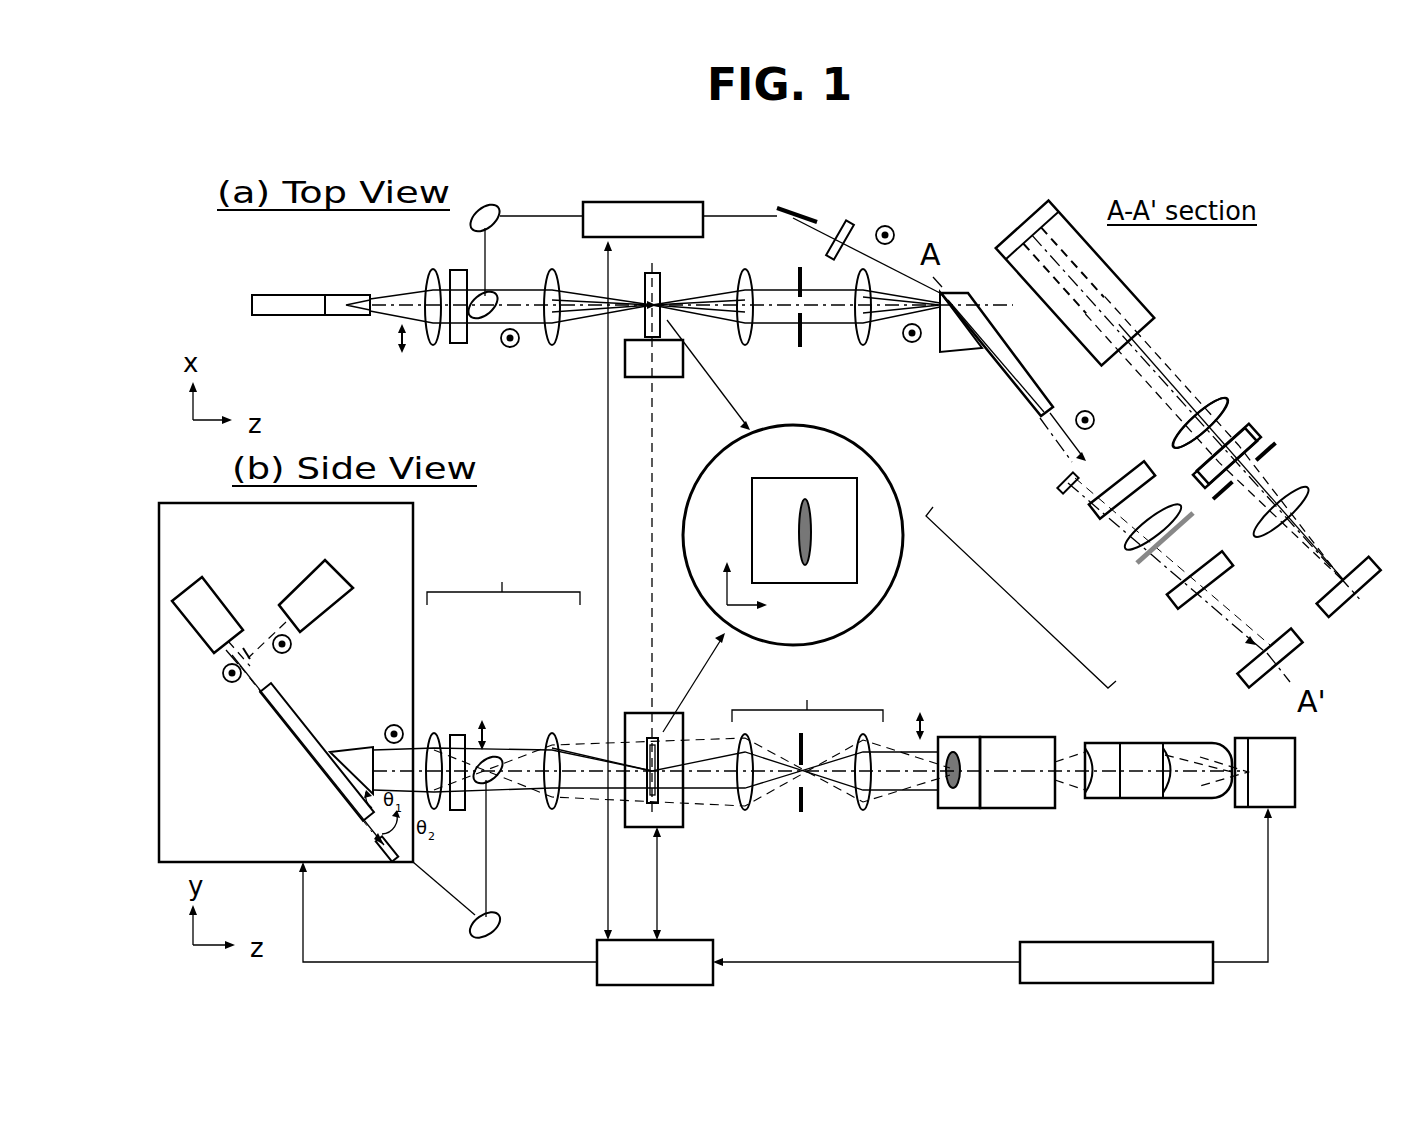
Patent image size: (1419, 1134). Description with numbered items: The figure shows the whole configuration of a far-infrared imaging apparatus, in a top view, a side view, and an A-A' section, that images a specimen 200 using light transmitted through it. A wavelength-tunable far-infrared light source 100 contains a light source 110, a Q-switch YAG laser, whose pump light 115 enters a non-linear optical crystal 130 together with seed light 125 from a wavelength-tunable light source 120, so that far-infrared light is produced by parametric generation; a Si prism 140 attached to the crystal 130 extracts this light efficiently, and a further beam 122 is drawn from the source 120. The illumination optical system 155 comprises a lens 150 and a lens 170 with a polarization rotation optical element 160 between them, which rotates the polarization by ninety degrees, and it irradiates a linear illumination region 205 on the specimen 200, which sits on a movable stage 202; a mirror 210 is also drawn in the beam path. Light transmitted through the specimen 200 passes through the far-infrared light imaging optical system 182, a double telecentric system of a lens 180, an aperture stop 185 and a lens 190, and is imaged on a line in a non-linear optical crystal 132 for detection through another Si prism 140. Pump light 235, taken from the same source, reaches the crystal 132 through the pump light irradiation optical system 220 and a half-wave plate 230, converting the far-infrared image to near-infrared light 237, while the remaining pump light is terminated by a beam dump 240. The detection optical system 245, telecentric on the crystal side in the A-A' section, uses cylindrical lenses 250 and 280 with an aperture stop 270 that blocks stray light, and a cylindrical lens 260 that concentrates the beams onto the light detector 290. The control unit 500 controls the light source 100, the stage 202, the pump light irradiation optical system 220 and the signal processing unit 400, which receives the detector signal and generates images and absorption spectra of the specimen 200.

The wavelength-tunable far-infrared light source 100 is at (413, 565).
The light source 110 is at (202, 588).
The pump light 115 is at (229, 652).
The wavelength-tunable light source 120 is at (325, 578).
The second light beam 122 is at (245, 653).
The seed light 125 is at (256, 672).
The non-linear optical crystal 130 is at (288, 317).
The non-linear optical crystal for detection 132 is at (1035, 833).
The Si prism 140 is at (347, 297).
The lens 150 is at (433, 730).
The illumination optical system 155 is at (503, 572).
The polarization rotation optical element 160 is at (460, 733).
The lens 170 is at (555, 737).
The lens 180 is at (743, 813).
The far-infrared light imaging optical system 182 is at (807, 689).
The aperture stop 185 is at (800, 813).
The lens 190 is at (858, 813).
The specimen 200 is at (653, 803).
The stage 202 is at (637, 380).
The linear illumination region 205 is at (802, 510).
The galvano mirror 210 is at (497, 753).
The pump light irradiation optical system 220 is at (630, 198).
The half-wave plate 230 is at (845, 223).
The pump light 235 is at (905, 270).
The near-infrared light 237 is at (1152, 390).
The beam dump 240 is at (1057, 491).
The detection optical system 245 is at (1021, 597).
The cylindrical lens 250 is at (1083, 523).
The cylindrical lens 260 is at (1128, 552).
The aperture stop 270 is at (1270, 447).
The cylindrical lens 280 is at (1168, 603).
The light detector 290 is at (1240, 680).
The signal processing unit 400 is at (1152, 940).
The control unit 500 is at (590, 942).